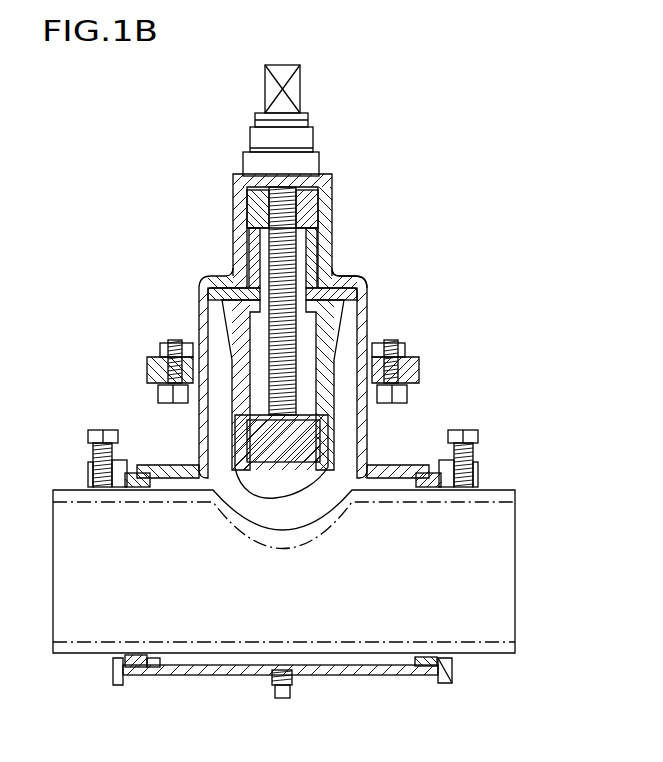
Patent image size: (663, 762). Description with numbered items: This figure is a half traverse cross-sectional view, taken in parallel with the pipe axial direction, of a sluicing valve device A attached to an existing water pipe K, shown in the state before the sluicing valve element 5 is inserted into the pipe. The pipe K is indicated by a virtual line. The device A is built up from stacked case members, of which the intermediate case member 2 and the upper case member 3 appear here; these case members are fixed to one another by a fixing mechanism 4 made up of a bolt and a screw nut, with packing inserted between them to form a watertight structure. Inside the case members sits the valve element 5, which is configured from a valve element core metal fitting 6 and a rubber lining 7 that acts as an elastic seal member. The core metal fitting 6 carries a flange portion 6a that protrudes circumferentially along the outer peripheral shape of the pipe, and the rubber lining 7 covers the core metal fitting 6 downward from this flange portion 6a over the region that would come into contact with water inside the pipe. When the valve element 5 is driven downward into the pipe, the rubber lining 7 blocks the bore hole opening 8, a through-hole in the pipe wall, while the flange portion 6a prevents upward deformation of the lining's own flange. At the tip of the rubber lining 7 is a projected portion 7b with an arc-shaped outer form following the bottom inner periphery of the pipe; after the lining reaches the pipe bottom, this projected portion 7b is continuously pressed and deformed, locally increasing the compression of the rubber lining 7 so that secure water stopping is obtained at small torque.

The sluicing valve device A is at (374, 176).
The existing water pipe K is at (505, 488).
The intermediate case member 2 is at (197, 413).
The upper case member 3 is at (233, 215).
The fixing mechanism 4 is at (88, 436).
The sluicing valve element 5 is at (140, 243).
The valve element core metal fitting 6 is at (233, 256).
The flange portion 6a is at (362, 284).
The rubber lining 7 is at (203, 317).
The projected portion 7b is at (370, 466).
The bore hole opening 8 is at (207, 460).